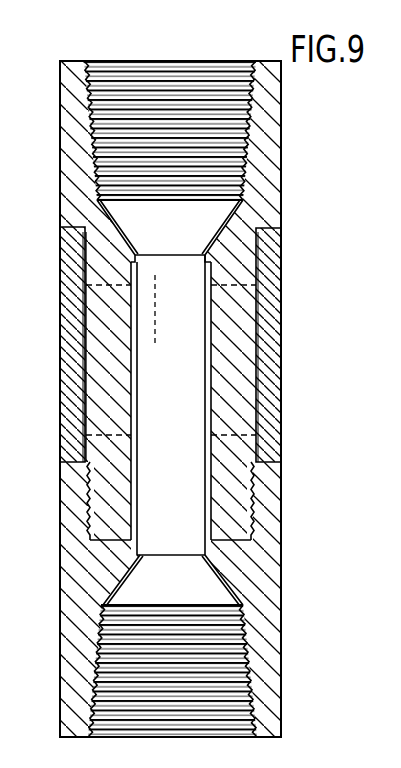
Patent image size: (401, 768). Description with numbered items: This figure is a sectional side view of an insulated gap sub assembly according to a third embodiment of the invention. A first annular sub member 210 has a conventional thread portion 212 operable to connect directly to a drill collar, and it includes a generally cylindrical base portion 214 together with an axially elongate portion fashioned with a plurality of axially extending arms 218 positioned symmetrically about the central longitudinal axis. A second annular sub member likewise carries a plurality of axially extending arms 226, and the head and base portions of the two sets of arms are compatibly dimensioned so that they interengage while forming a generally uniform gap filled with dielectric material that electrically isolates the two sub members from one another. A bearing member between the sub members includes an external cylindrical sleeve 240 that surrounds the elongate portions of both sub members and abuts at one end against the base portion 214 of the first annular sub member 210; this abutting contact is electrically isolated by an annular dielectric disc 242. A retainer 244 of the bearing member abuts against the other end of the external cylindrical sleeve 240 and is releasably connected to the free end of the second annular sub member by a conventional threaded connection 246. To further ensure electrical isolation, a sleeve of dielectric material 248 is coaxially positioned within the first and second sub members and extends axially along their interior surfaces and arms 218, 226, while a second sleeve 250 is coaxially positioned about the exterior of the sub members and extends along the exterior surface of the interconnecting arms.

The first annular sub member 210 is at (282, 165).
The thread portion 212 is at (96, 92).
The base portion 214 is at (59, 172).
The axially extending arms 218 is at (131, 362).
The axially extending arms 226 is at (247, 364).
The external cylindrical sleeve 240 is at (60, 402).
The annular dielectric disc 242 is at (70, 226).
The lower body section 244 is at (60, 548).
The threaded connection 246 is at (260, 511).
The sleeve of dielectric material 248 is at (140, 262).
The second sleeve 250 is at (82, 314).